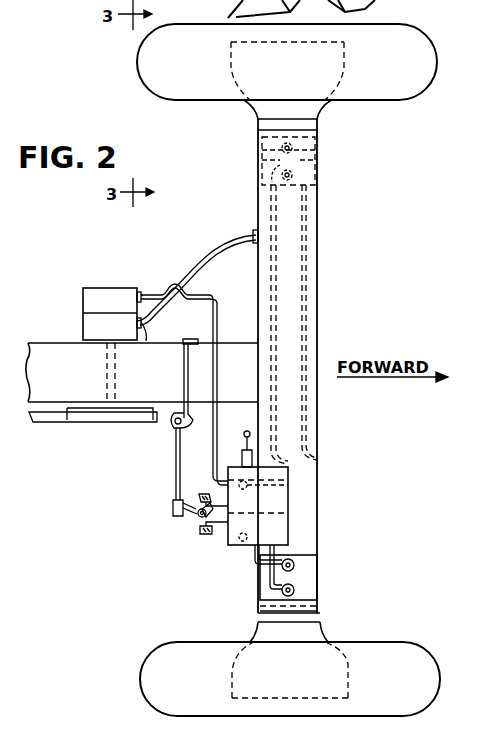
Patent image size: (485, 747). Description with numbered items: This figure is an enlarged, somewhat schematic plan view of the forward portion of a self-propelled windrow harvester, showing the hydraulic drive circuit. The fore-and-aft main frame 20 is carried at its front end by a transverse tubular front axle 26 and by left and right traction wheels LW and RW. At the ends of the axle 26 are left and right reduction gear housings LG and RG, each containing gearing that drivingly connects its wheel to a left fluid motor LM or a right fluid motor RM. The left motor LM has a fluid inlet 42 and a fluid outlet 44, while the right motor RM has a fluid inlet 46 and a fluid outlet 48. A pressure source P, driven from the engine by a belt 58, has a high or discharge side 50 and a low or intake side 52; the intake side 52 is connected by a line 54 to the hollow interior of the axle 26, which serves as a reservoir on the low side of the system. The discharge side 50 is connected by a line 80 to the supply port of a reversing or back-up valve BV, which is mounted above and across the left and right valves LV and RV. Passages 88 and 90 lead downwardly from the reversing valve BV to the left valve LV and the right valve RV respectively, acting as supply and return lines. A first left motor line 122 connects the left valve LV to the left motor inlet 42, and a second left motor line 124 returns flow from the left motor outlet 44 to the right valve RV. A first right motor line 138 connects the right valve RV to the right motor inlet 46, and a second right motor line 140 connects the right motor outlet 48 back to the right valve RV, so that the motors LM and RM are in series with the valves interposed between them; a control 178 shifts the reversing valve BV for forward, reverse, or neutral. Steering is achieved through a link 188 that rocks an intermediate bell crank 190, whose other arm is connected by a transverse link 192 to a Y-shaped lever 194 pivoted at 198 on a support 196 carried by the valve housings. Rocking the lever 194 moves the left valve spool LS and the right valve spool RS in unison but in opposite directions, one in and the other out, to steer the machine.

The left traction wheel LW is at (183, 98).
The left reduction gear housing LG is at (328, 100).
The left fluid motor LM is at (316, 151).
The fluid outlet 44 is at (262, 150).
The fluid inlet 42 is at (262, 175).
The transverse tubular front axle 26 is at (318, 219).
The line 54 is at (219, 249).
The first left motor line 122 is at (271, 264).
The second left motor line 124 is at (307, 416).
The discharge side 50 is at (145, 294).
The pressure source P is at (83, 313).
The line 80 is at (218, 306).
The main frame 20 is at (32, 344).
The link 188 is at (190, 335).
The intake side 52 is at (143, 340).
The bell crank 190 is at (184, 381).
The belt 58 is at (48, 418).
The transverse link 192 is at (176, 452).
The control 178 is at (245, 440).
The left valve spool LS is at (205, 494).
The Y-shaped lever 194 is at (183, 503).
The pivot 198 is at (198, 514).
The right valve spool RS is at (203, 533).
The support 196 is at (214, 540).
The reversing valve BV is at (228, 549).
The passage 88 is at (289, 484).
The left valve LV is at (288, 496).
The right valve RV is at (284, 531).
The passage 90 is at (243, 545).
The fluid outlet 48 is at (291, 560).
The right fluid motor RM is at (310, 568).
The fluid inlet 46 is at (294, 590).
The second right motor line 140 is at (258, 574).
The first right motor line 138 is at (276, 591).
The right reduction gear housing RG is at (318, 642).
The right traction wheel RW is at (177, 647).